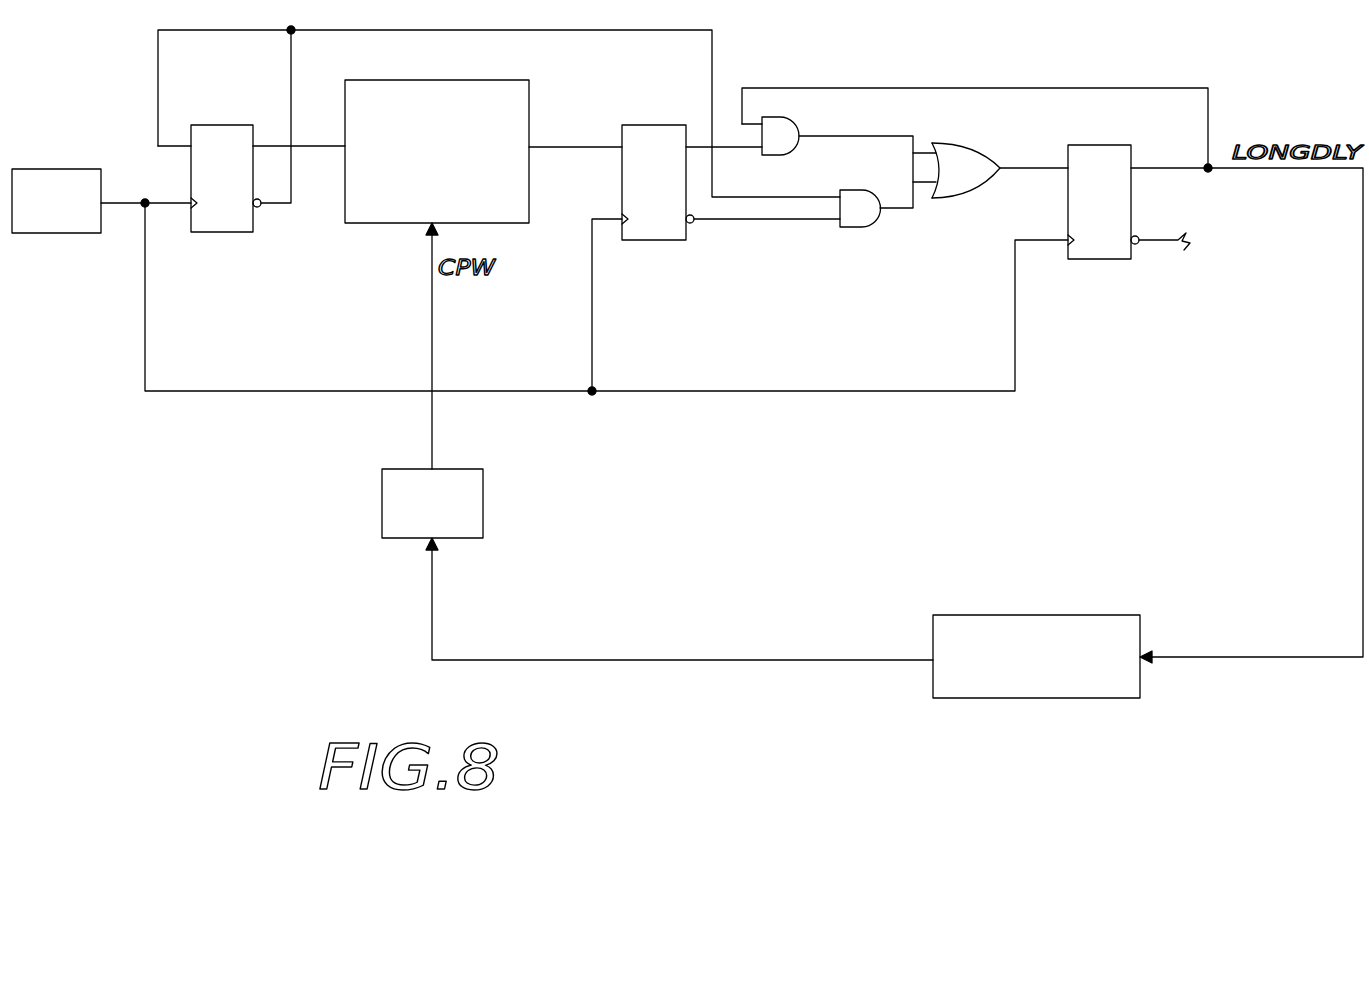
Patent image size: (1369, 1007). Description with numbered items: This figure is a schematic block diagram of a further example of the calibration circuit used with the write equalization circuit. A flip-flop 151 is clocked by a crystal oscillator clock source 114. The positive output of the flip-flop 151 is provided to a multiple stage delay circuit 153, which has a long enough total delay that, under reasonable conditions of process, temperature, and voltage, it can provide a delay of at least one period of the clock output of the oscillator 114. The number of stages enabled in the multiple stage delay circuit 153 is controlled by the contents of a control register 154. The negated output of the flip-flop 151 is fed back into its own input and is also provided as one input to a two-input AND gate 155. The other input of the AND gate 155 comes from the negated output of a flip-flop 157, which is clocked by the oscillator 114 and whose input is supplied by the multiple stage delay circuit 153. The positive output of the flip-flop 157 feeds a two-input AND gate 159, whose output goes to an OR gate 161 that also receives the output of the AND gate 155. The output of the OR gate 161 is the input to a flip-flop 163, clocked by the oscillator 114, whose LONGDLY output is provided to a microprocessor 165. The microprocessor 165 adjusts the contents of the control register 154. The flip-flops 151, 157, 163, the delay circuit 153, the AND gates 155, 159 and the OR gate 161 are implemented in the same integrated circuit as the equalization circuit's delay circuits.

The crystal oscillator clock source 114 is at (47, 233).
The flip-flop 151 is at (221, 232).
The multiple stage delay circuit 153 is at (529, 100).
The control register 154 is at (483, 505).
The AND gate 155 is at (858, 227).
The flip-flop 157 is at (655, 240).
The AND gate 159 is at (790, 121).
The OR gate 161 is at (1000, 128).
The flip-flop 163 is at (1110, 259).
The microprocessor 165 is at (1045, 698).